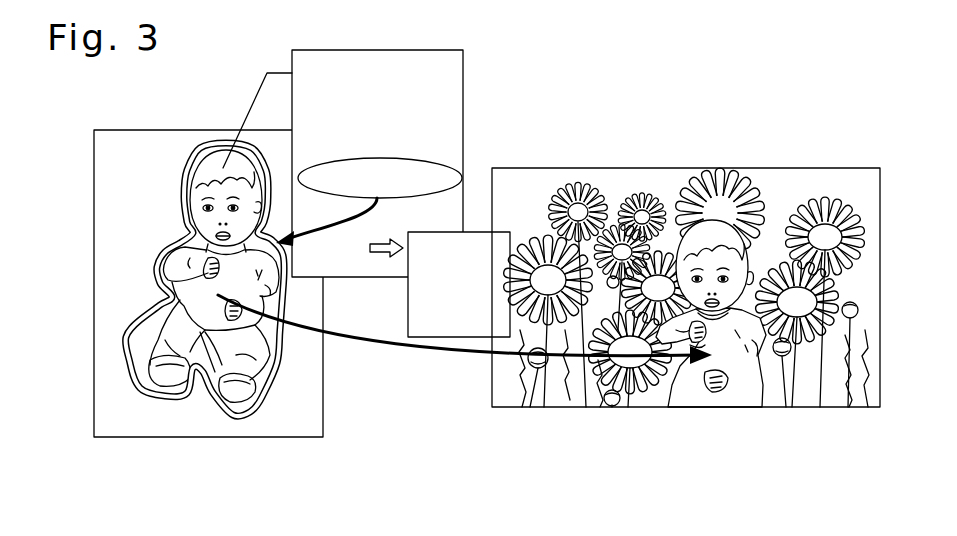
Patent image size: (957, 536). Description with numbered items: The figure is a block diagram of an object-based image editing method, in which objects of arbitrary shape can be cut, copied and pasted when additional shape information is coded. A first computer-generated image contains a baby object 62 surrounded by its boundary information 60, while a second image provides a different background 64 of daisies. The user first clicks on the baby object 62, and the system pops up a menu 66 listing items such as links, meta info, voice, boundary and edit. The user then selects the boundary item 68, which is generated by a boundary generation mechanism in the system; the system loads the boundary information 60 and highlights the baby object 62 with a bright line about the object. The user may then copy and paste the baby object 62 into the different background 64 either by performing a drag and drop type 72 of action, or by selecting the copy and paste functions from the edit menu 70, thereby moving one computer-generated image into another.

The boundary information 60 is at (113, 130).
The baby object 62 is at (205, 177).
The different background 64 is at (715, 168).
The menu 66 is at (463, 59).
The boundary item 68 is at (443, 158).
The edit menu 70 is at (407, 318).
The drag and drop type of action 72 is at (387, 347).